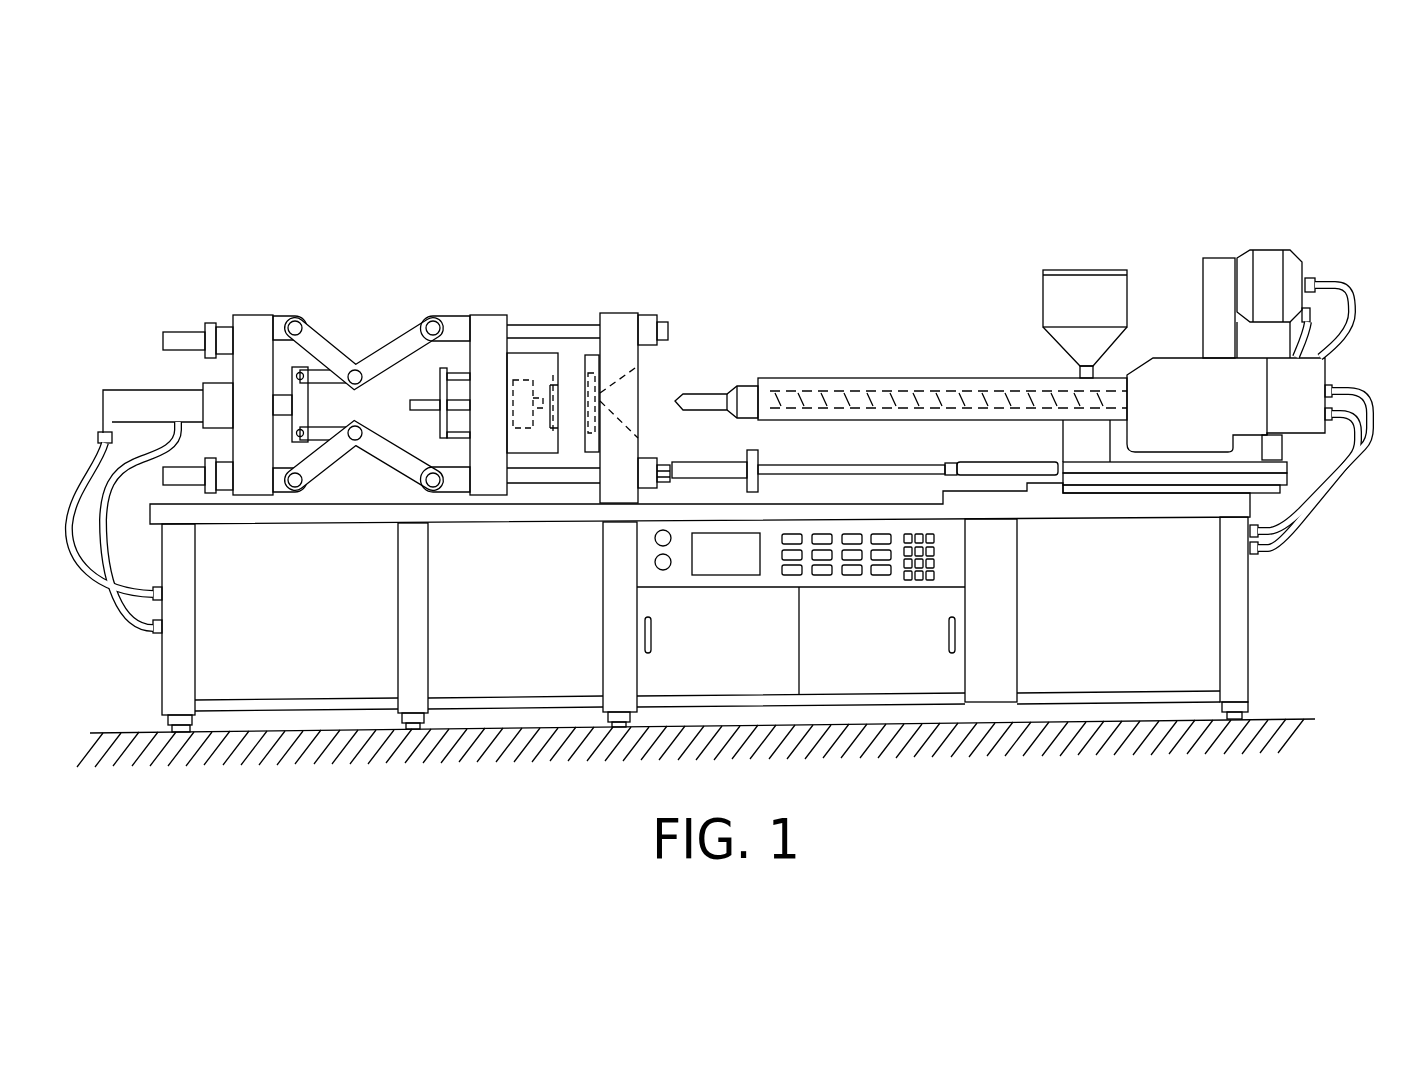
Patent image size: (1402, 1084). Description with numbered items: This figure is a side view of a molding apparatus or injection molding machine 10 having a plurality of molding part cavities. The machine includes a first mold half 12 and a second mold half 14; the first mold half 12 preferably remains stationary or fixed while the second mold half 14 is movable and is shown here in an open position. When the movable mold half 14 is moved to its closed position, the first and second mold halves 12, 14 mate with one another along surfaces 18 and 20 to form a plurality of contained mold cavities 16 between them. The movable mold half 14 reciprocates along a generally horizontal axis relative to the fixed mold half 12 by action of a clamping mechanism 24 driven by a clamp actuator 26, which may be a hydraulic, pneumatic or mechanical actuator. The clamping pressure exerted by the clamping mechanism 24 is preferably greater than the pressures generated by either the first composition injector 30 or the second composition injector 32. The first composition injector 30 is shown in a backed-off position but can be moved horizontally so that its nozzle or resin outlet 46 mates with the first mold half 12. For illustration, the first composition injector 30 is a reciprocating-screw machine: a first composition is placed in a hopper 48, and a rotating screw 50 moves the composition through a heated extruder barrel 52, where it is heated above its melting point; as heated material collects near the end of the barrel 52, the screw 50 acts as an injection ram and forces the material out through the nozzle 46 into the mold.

The injection molding machine 10 is at (568, 216).
The first mold half 12 is at (602, 362).
The second mold half 14 is at (515, 363).
The mold cavities 16 is at (573, 442).
The mating surface 18 is at (576, 360).
The mating surface 20 is at (578, 360).
The clamping mechanism 24 is at (252, 298).
The clamp actuator 26 is at (135, 397).
The first composition injector 30 is at (936, 360).
The second composition injector 32 is at (527, 432).
The nozzle 46 is at (678, 403).
The hopper 48 is at (1057, 267).
The rotating screw 50 is at (1027, 376).
The heated extruder barrel 52 is at (867, 377).